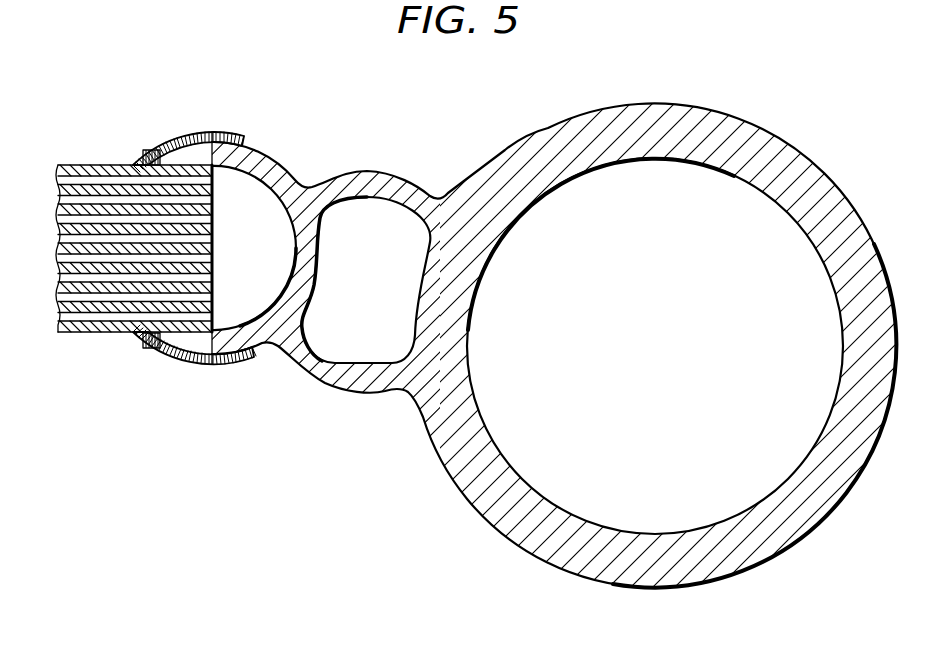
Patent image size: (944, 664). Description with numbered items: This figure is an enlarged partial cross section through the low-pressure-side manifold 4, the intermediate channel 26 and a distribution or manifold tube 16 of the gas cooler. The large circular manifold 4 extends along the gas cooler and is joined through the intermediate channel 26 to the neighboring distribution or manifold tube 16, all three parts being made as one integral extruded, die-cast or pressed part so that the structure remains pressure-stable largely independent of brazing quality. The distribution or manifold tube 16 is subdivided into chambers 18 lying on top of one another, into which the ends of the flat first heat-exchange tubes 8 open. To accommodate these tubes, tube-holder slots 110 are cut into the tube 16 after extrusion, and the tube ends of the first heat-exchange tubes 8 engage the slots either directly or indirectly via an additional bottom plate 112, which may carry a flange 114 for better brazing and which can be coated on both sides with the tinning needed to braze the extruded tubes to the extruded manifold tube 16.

The manifold on the low-pressure side 4 is at (659, 360).
The first heat-exchange tubes 8 is at (68, 318).
The distribution or manifold tube 16 is at (265, 147).
The chambers 18 is at (262, 259).
The intermediate channel 26 is at (380, 296).
The tube-holder slots 110 is at (100, 325).
The bottom plate 112 is at (180, 134).
The flange 114 is at (148, 340).